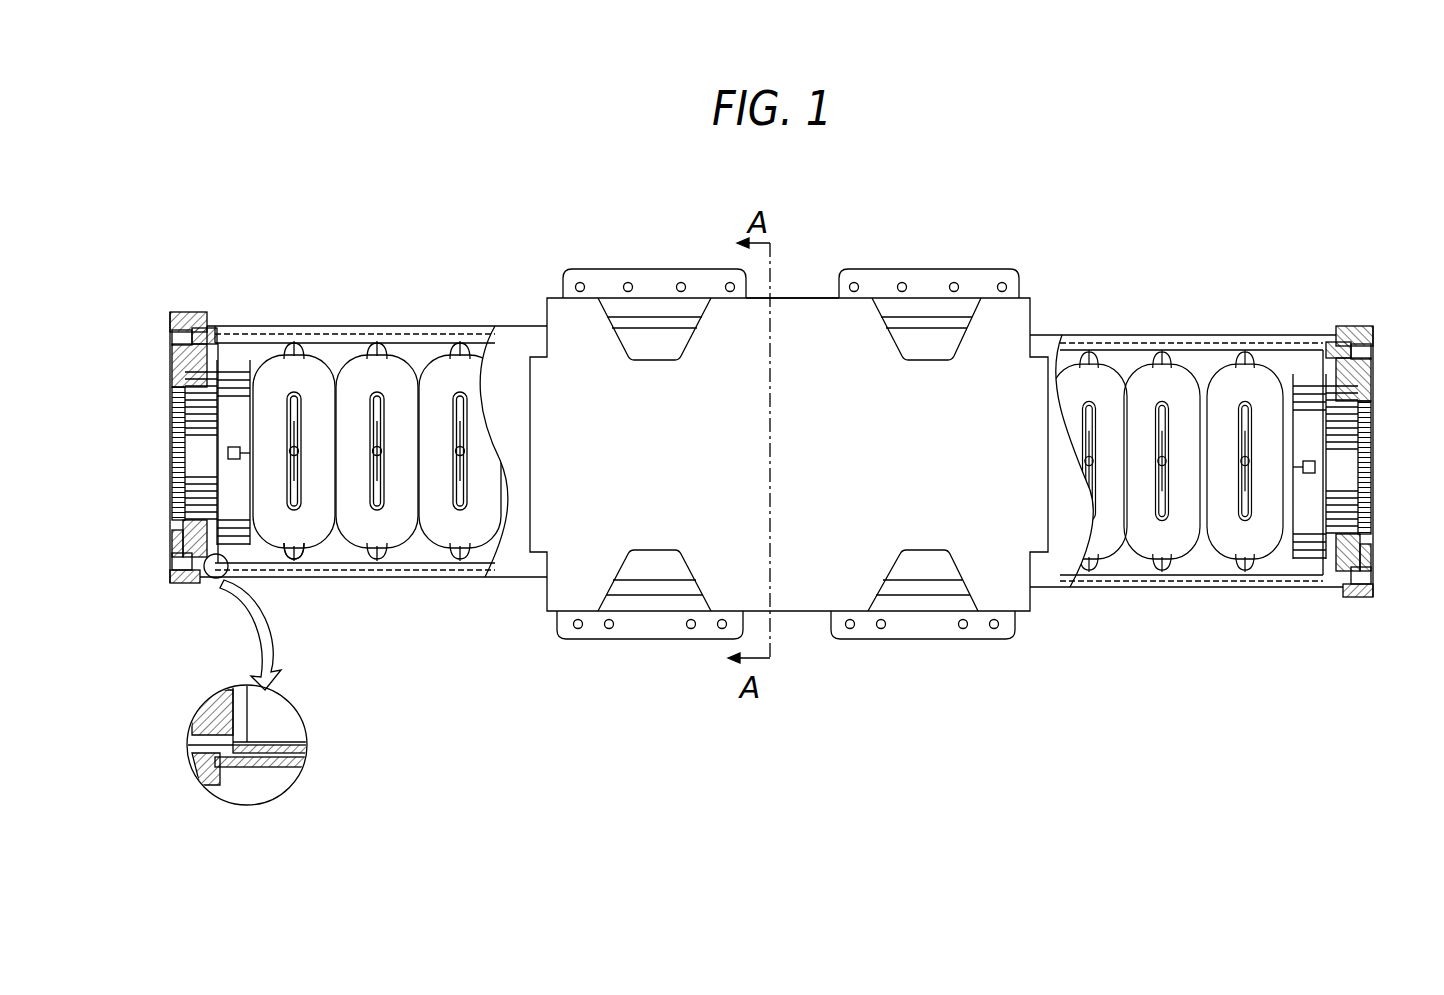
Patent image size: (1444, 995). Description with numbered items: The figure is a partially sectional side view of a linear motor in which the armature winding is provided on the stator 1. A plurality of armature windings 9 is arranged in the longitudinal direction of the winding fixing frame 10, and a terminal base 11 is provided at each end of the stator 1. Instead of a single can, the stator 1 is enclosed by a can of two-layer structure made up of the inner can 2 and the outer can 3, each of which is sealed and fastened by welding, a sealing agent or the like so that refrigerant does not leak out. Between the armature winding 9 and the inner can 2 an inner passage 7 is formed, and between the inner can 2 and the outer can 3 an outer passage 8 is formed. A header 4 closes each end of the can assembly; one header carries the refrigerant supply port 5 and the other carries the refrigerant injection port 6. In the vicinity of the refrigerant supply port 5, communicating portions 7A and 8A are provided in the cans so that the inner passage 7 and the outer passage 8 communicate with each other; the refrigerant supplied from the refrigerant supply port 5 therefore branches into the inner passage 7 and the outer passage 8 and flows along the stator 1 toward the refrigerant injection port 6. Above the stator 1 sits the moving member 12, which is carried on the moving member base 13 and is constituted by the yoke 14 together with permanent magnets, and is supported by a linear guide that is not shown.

The stator 1 is at (517, 578).
The inner can 2 is at (452, 334).
The outer can 3 is at (385, 326).
The header 4 is at (181, 585).
The refrigerant supply port 5 is at (175, 331).
The refrigerant injection port 6 is at (1367, 347).
The inner passage 7 is at (212, 326).
The communicating portion 7A is at (303, 742).
The outer passage 8 is at (253, 326).
The communicating portion 8A is at (240, 768).
The armature winding 9 is at (310, 542).
The winding fixing frame 10 is at (403, 556).
The terminal base 11 is at (180, 447).
The moving member 12 is at (813, 334).
The moving member base 13 is at (975, 272).
The yoke 14 is at (817, 605).